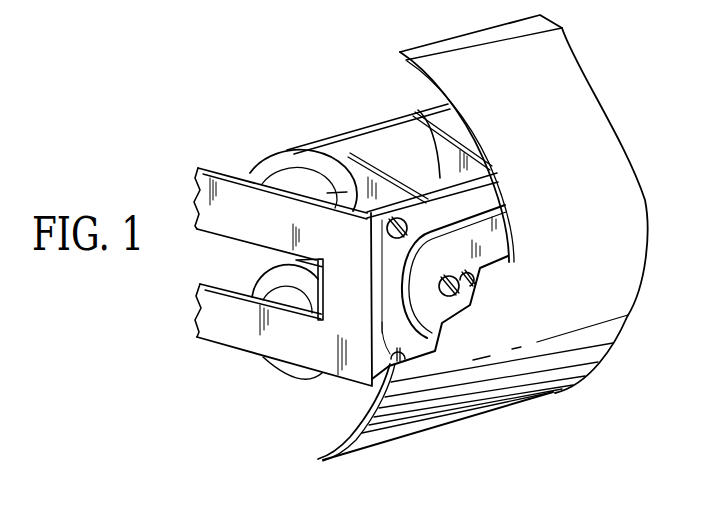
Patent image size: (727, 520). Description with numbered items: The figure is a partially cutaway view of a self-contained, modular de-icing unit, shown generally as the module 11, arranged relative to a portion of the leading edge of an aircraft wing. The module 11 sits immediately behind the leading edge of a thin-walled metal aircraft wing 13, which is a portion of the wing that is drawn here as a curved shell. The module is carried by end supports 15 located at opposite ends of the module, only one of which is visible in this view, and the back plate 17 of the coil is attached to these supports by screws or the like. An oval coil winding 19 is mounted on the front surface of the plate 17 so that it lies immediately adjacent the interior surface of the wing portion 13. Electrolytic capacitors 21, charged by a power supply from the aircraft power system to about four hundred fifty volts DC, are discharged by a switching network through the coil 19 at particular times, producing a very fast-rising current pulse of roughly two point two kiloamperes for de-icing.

The de-icing module 11 is at (208, 251).
The aircraft wing 13 is at (410, 420).
The end supports 15 is at (226, 319).
The back plate 17 is at (373, 358).
The oval coil winding 19 is at (467, 240).
The electrolytic capacitors 21 is at (323, 172).